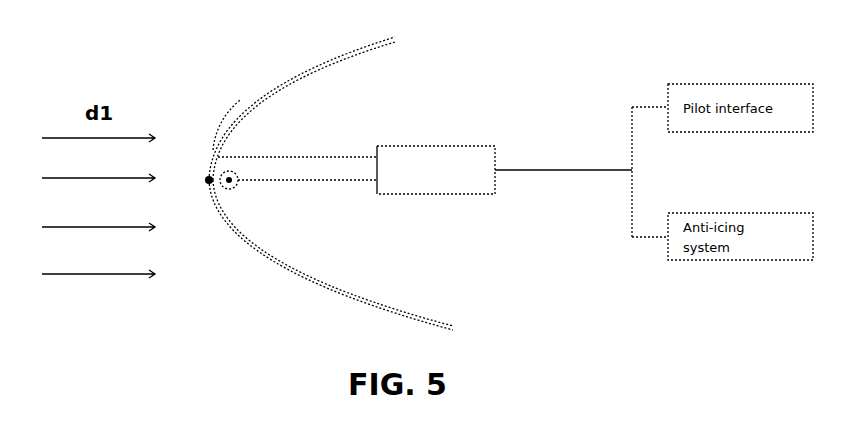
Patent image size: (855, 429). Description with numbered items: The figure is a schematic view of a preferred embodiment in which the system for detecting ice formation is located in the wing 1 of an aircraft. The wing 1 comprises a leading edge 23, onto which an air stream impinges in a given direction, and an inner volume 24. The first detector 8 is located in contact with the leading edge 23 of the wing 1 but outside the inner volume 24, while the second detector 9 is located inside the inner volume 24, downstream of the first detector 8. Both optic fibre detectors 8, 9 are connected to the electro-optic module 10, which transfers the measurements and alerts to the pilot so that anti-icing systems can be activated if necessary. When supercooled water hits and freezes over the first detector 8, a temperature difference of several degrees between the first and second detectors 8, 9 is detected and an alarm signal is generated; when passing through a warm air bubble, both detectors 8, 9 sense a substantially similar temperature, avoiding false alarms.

The wing 1 is at (266, 61).
The leading edge 23 is at (232, 113).
The inner volume 24 is at (319, 143).
The first detector 8 is at (206, 197).
The second detector 9 is at (238, 201).
The electro-optic module 10 is at (436, 170).